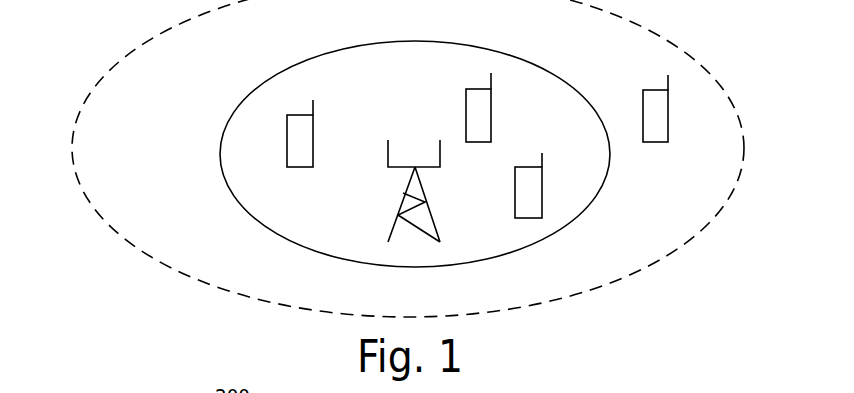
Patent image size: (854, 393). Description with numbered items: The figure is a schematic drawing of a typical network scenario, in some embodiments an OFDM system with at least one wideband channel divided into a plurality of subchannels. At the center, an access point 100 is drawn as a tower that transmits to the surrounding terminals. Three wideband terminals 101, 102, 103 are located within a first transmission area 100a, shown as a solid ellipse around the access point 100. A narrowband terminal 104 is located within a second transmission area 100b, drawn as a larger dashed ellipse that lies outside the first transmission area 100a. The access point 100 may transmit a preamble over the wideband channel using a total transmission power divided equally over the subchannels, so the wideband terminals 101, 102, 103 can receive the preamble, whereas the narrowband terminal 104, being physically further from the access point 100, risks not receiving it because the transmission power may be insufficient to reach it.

The access point 100 is at (402, 199).
The first transmission area 100a is at (240, 103).
The second transmission area 100b is at (130, 52).
The wideband terminal 101 is at (287, 141).
The wideband terminal 102 is at (491, 108).
The wideband terminal 103 is at (515, 193).
The narrowband terminal 104 is at (668, 110).